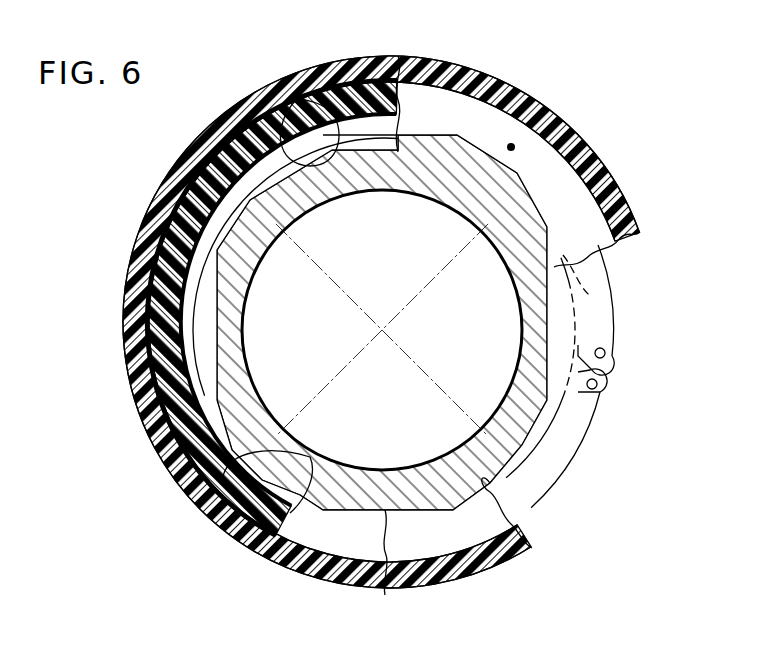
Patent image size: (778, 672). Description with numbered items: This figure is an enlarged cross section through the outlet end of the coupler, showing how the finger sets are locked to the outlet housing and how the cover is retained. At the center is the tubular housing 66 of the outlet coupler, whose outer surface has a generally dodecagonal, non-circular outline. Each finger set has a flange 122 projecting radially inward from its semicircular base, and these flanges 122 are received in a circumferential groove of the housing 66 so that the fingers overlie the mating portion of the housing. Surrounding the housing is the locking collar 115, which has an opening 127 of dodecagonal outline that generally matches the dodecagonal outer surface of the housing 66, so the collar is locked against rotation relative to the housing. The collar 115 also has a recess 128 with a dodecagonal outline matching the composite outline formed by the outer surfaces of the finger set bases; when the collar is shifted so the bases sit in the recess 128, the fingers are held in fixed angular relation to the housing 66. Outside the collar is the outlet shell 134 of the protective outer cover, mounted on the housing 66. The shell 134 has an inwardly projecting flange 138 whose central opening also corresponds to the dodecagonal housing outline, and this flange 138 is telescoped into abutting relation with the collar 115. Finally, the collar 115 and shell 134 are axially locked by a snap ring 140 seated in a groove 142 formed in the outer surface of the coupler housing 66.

The tubular housing 66 is at (592, 297).
The locking collar 115 is at (383, 72).
The flange 122 is at (245, 480).
The opening 127 is at (300, 88).
The recess 128 is at (281, 97).
The outlet shell 134 is at (560, 108).
The inwardly projecting flange 138 is at (512, 147).
The snap ring 140 is at (620, 326).
The groove 142 is at (550, 420).